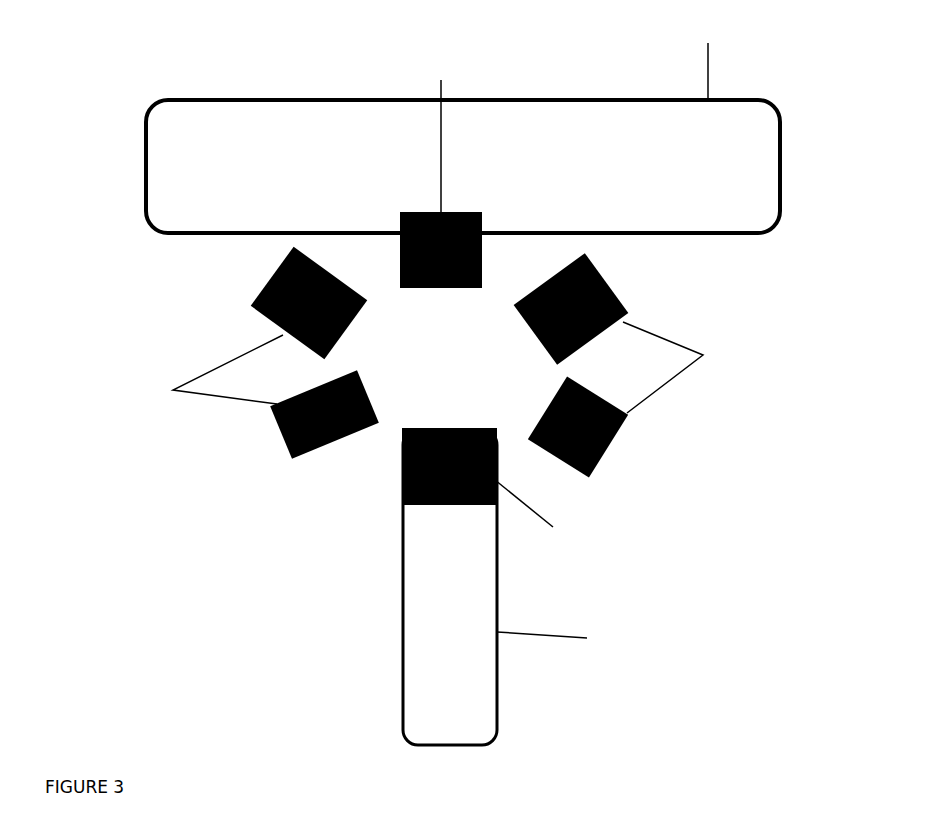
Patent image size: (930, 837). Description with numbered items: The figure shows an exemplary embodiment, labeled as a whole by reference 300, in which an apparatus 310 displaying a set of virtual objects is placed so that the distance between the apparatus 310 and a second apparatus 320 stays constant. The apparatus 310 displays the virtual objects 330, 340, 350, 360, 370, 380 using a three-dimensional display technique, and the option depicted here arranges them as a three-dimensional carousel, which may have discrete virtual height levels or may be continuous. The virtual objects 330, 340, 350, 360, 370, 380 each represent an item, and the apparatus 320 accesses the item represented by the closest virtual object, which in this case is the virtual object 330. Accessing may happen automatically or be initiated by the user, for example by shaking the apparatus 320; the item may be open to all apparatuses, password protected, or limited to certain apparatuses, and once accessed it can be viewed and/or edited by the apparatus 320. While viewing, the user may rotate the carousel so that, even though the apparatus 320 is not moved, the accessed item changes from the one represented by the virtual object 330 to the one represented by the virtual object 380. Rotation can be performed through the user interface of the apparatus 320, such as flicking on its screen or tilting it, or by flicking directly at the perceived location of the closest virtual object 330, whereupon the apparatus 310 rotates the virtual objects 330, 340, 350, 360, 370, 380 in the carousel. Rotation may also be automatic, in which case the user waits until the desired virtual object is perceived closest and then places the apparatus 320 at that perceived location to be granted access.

The mixed reality environment 300 is at (75, 67).
The apparatus 310 is at (463, 166).
The apparatus 320 is at (450, 587).
The virtual object 330 is at (449, 466).
The virtual object 340 is at (324, 414).
The virtual object 350 is at (309, 303).
The virtual object 360 is at (441, 250).
The virtual object 370 is at (571, 309).
The virtual object 380 is at (578, 427).